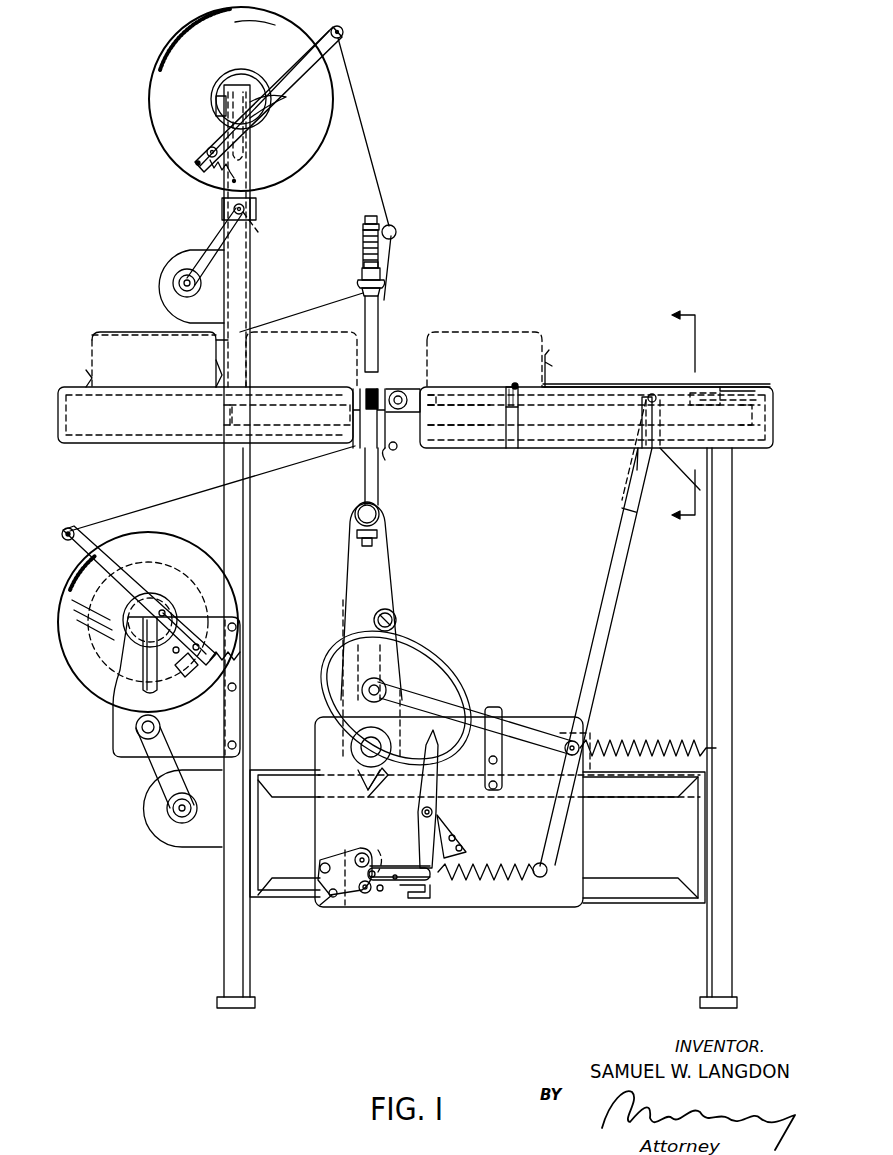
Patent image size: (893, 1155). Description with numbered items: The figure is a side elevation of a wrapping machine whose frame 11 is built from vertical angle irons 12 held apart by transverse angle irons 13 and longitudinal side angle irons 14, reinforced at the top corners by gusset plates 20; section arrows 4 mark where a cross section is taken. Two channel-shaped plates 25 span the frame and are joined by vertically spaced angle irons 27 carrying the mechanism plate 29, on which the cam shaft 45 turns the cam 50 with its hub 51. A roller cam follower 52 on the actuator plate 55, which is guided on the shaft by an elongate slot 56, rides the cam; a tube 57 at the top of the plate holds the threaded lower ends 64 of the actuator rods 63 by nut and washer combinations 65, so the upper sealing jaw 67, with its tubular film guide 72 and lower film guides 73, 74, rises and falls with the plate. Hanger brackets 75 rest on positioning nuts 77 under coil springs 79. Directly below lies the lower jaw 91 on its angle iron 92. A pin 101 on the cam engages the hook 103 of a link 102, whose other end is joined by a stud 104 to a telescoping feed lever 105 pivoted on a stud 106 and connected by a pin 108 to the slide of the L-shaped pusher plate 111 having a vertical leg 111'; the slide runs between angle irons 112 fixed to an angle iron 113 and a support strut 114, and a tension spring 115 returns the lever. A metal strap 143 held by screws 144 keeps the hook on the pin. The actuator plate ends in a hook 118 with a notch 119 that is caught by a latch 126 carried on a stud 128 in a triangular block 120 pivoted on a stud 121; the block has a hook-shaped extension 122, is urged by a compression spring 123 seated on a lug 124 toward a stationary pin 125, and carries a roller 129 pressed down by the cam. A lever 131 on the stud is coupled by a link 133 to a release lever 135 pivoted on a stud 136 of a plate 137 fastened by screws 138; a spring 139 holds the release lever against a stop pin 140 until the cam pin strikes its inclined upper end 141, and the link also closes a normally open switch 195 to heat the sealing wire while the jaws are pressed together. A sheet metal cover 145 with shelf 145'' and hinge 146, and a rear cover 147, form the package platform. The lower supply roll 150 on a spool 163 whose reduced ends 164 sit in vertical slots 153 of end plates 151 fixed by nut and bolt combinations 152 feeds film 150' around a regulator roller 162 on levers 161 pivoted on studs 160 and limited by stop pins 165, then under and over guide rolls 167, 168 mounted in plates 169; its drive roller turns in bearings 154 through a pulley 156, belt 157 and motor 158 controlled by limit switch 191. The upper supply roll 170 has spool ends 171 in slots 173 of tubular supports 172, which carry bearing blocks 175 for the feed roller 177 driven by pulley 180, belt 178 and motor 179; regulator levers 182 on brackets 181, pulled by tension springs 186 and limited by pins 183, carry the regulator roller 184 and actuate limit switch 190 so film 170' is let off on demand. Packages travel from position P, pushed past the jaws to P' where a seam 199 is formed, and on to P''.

The section line 4 is at (677, 412).
The packaging machine frame 11 is at (216, 911).
The vertically disposed angle irons 12 is at (224, 950).
The horizontal transversely-extending angle irons 13 is at (228, 415).
The longitudinally-extending side angle irons 14 is at (510, 448).
The gusset plates 20 is at (258, 478).
The channel shaped plates 25 is at (252, 824).
The angle irons 27 is at (632, 797).
The mechanism plate 29 is at (490, 907).
The cam shaft 45 is at (351, 747).
The cam 50 is at (430, 654).
The hub 51 is at (330, 724).
The roller cam follower 52 is at (396, 611).
The actuator plate 55 is at (398, 567).
The elongate slot 56 is at (385, 641).
The tube 57 is at (380, 509).
The upper jaw actuator rods 63 is at (378, 332).
The threaded lower ends 64 is at (372, 541).
The nut and washer combinations 65 is at (378, 533).
The upper sealing jaw 67 is at (341, 262).
The upper tubular film guide 72 is at (392, 225).
The lower film guide 73 is at (382, 271).
The lower film guide 74 is at (358, 284).
The hanger brackets 75 is at (364, 271).
The positioning nut 77 is at (380, 294).
The coil springs 79 is at (363, 243).
The lower jaw 91 is at (362, 377).
The angle iron 92 is at (356, 388).
The pin 101 is at (382, 688).
The link 102 is at (388, 696).
The hook 103 is at (385, 684).
The stud 104 is at (580, 741).
The telescoping feed lever 105 is at (604, 646).
The stud 106 is at (541, 877).
The pin 108 is at (648, 404).
The pusher plate 111 is at (656, 367).
The vertical leg 111' is at (568, 367).
The angle irons 112 is at (765, 399).
The angle iron 113 is at (440, 400).
The support strut 114 is at (705, 392).
The tension spring 115 is at (660, 744).
The hook 118 is at (368, 793).
The notch 119 is at (368, 785).
The block 120 is at (340, 855).
The stud 121 is at (320, 865).
The hook-shaped extension 122 is at (382, 891).
The compression spring 123 is at (330, 889).
The lug 124 is at (311, 909).
The stationary pin 125 is at (395, 881).
The latch 126 is at (345, 905).
The stud 128 is at (365, 893).
The roller 129 is at (363, 852).
The lever 131 is at (387, 858).
The link 133 is at (404, 867).
The release lever 135 is at (435, 861).
The stud 136 is at (422, 811).
The plate 137 is at (462, 838).
The screws 138 is at (463, 847).
The spring 139 is at (482, 867).
The stop pin 140 is at (438, 830).
The inclined upper end 141 is at (438, 740).
The metal strap 143 is at (502, 708).
The screws 144 is at (497, 760).
The sheet metal cover 145 is at (756, 369).
The shelf 145'' is at (451, 378).
The hinge 146 is at (514, 383).
The second cover 147 is at (75, 385).
The lower supply roll 150 is at (131, 622).
The film 150' is at (212, 488).
The end plates 151 is at (113, 733).
The nut and bolt combinations 152 is at (237, 627).
The vertical slots 153 is at (148, 678).
The bearings 154 is at (158, 729).
The pulley 156 is at (148, 728).
The belt 157 is at (150, 762).
The electric motor 158 is at (150, 824).
The stud 160 is at (200, 640).
The film feed regulator lever 161 is at (130, 568).
The film feed regulator roller 162 is at (62, 538).
The spool 163 is at (125, 605).
The reduced diameter ends 164 is at (143, 639).
The stop pins 165 is at (162, 607).
The guide roll 167 is at (390, 454).
The guide roll 168 is at (386, 390).
The plates 169 is at (393, 450).
The upper supply roll 170 is at (215, 99).
The film 170' is at (381, 169).
The spool ends 171 is at (238, 94).
The upright tubular members 172 is at (216, 340).
The vertical slots 173 is at (250, 130).
The bearing blocks 175 is at (256, 208).
The feed roller 177 is at (256, 232).
The belt 178 is at (210, 243).
The electric motor 179 is at (152, 294).
The pulley 180 is at (234, 208).
The L-shaped bracket 181 is at (210, 147).
The upper feed regulator lever 182 is at (300, 70).
The pin 183 is at (270, 101).
The upper film feed regulator roller 184 is at (339, 27).
The tension spring 186 is at (212, 181).
The limit switch 190 is at (216, 106).
The limit switch 191 is at (182, 677).
The switch 195 is at (422, 898).
The seam 199 is at (216, 372).
The package P is at (484, 346).
The package position P' is at (301, 344).
The package position P'' is at (141, 341).